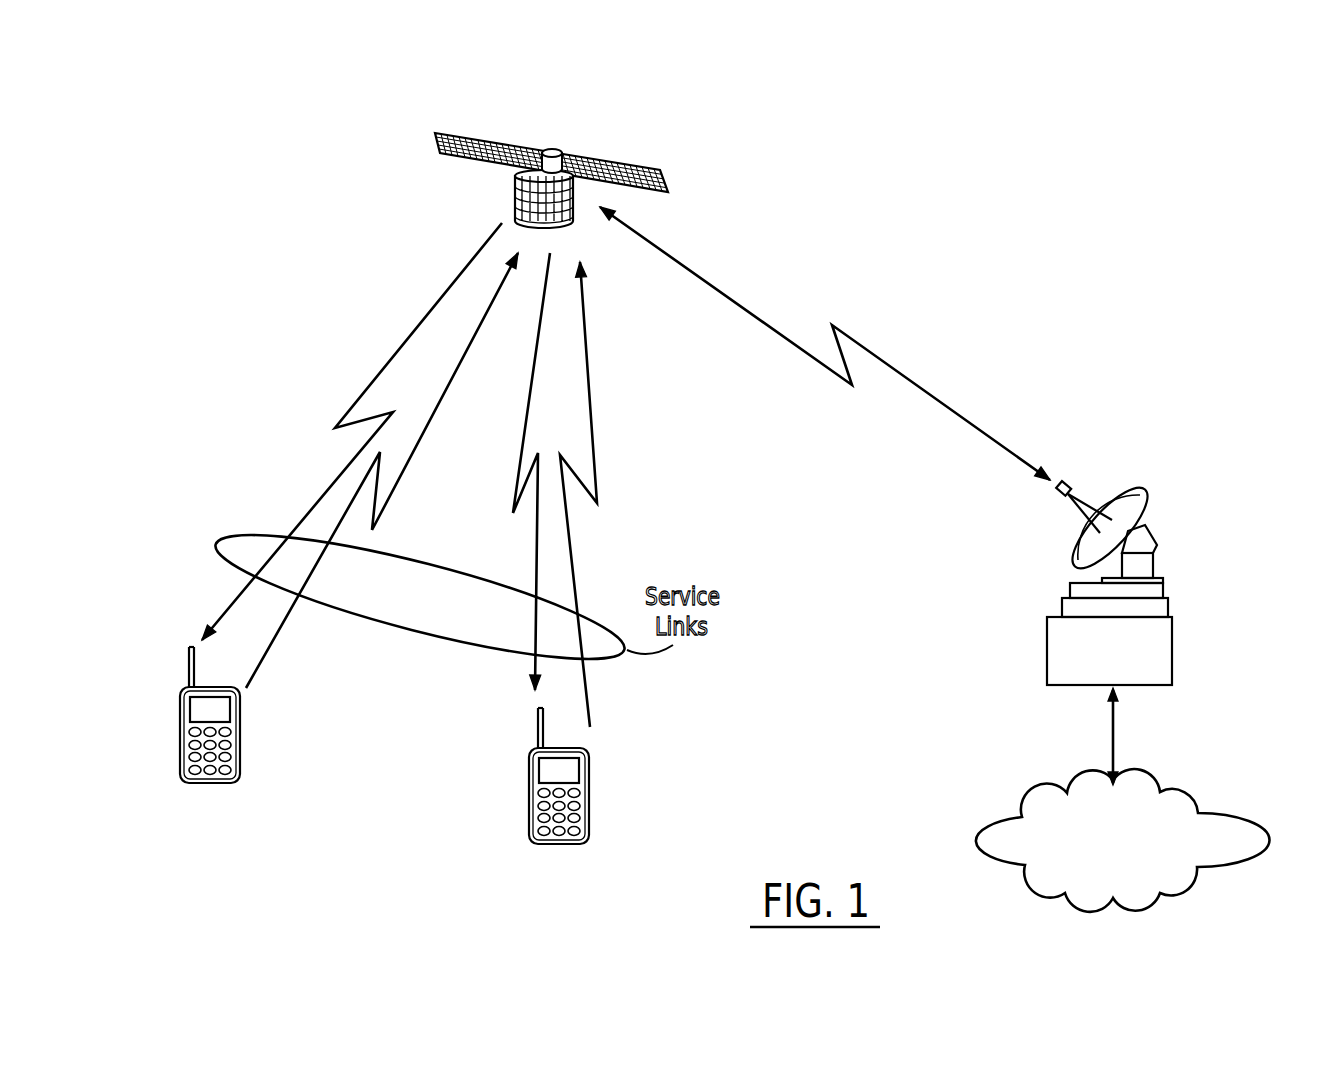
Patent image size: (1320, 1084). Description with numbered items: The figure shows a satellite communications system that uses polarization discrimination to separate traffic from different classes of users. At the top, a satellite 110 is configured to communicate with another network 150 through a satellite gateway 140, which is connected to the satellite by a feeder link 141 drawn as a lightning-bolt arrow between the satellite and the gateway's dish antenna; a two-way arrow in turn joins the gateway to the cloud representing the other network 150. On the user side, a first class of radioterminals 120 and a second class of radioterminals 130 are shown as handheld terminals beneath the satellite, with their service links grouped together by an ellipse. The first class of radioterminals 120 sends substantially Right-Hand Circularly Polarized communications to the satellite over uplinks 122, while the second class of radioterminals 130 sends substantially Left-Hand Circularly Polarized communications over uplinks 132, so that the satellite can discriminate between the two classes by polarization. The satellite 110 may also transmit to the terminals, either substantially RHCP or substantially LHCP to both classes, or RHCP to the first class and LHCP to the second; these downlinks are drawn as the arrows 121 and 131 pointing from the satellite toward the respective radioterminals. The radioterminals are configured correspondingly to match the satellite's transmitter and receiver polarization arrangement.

The satellite 110 is at (605, 163).
The first class of radioterminals 120 is at (243, 746).
The RHCP or LHCP service link (forward) 121 is at (232, 603).
The uplinks 122 is at (283, 630).
The second class of radioterminals 130 is at (592, 785).
The RHCP or LHCP service link (forward) 131 is at (535, 563).
The uplinks 132 is at (575, 555).
The satellite gateway 140 is at (1173, 613).
The feeder link 141 is at (1003, 447).
The another network 150 is at (1190, 790).